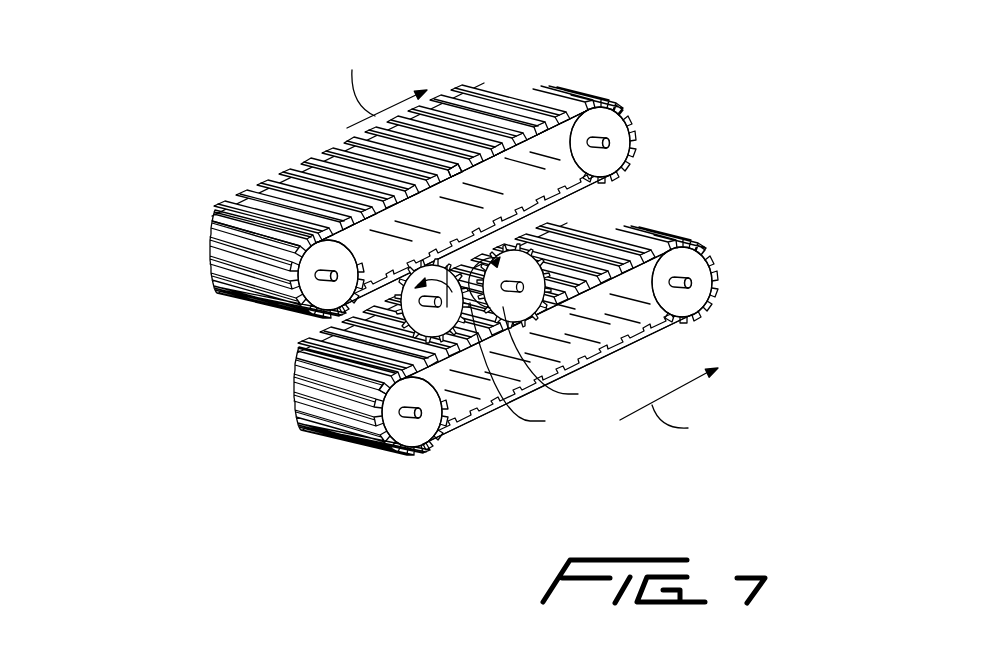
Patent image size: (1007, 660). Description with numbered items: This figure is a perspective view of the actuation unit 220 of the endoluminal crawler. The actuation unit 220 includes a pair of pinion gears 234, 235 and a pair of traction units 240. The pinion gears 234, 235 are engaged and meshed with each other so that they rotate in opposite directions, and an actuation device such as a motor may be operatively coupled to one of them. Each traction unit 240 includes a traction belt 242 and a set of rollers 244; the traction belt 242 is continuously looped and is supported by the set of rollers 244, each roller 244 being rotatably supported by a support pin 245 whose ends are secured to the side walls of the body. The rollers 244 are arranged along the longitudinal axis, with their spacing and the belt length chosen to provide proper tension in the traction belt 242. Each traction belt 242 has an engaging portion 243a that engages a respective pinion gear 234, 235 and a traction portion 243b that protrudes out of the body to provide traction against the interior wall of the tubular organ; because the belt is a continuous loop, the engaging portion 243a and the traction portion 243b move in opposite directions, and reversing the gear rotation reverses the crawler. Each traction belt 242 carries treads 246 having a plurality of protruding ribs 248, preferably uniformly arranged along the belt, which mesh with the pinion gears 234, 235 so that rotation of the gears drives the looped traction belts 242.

The actuation unit 220 is at (480, 266).
The pinion gear 234 is at (402, 318).
The pinion gear 235 is at (548, 320).
The traction unit 240 is at (489, 266).
The traction belt 242 is at (350, 418).
The engaging portion 243a is at (590, 263).
The traction portion 243b is at (478, 422).
The roller 244 is at (400, 433).
The support pin 245 is at (425, 420).
The tread 246 is at (514, 80).
The protruding rib 248 is at (290, 186).